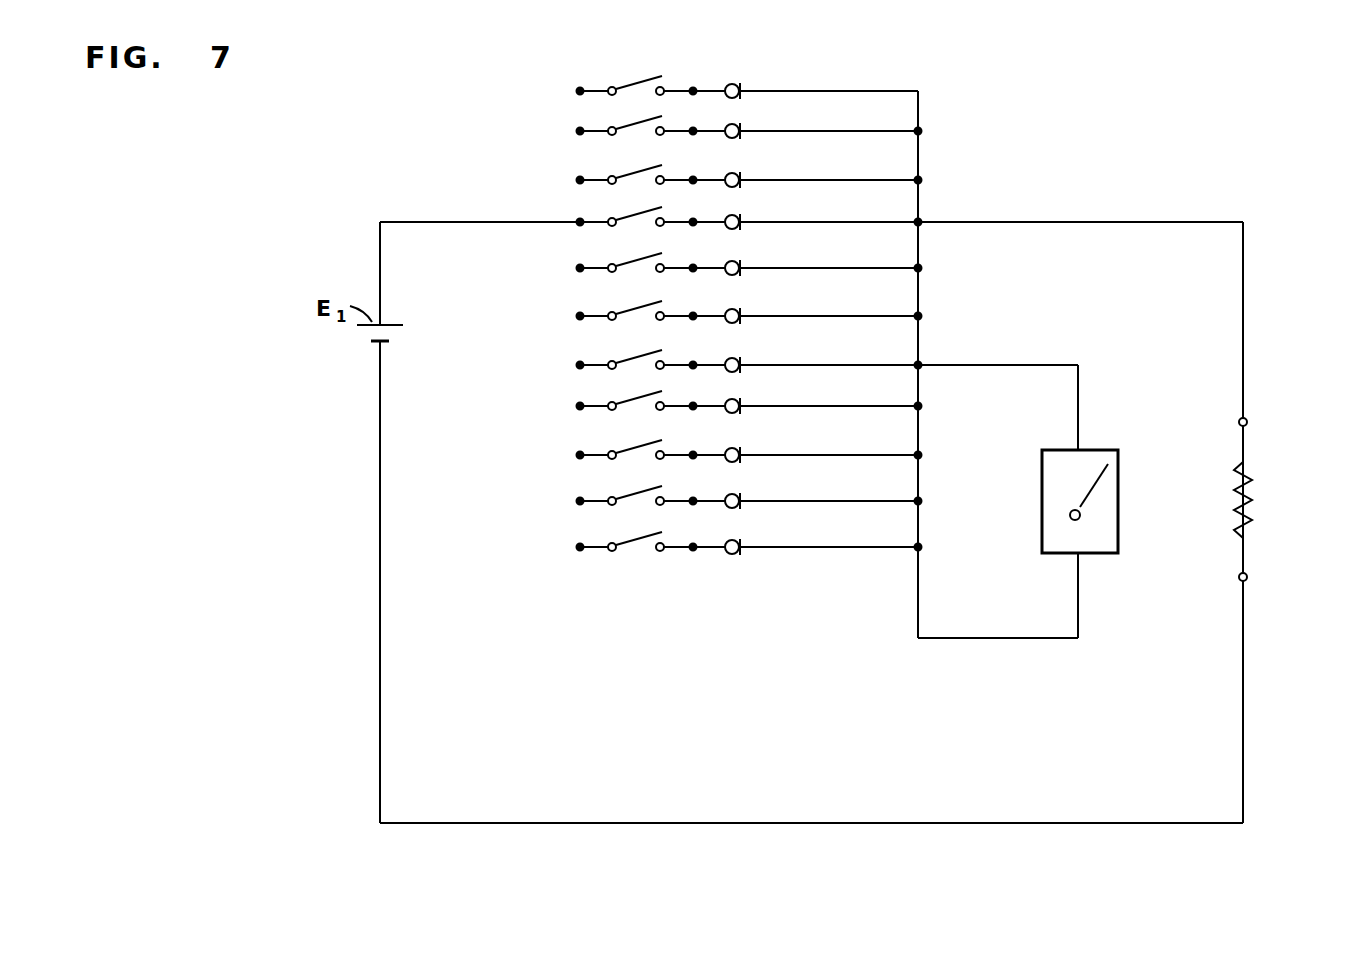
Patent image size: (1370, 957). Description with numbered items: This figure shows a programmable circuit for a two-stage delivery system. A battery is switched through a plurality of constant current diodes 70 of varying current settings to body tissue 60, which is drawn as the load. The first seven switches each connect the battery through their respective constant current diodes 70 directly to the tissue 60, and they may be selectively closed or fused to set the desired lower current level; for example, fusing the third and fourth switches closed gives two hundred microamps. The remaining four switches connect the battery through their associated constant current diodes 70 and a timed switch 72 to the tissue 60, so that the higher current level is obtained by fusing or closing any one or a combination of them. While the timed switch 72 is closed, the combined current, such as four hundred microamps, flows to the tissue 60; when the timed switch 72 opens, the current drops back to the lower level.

The constant current diodes 70 is at (822, 52).
The timed switch 72 is at (1095, 553).
The body tissue 60 is at (1248, 497).